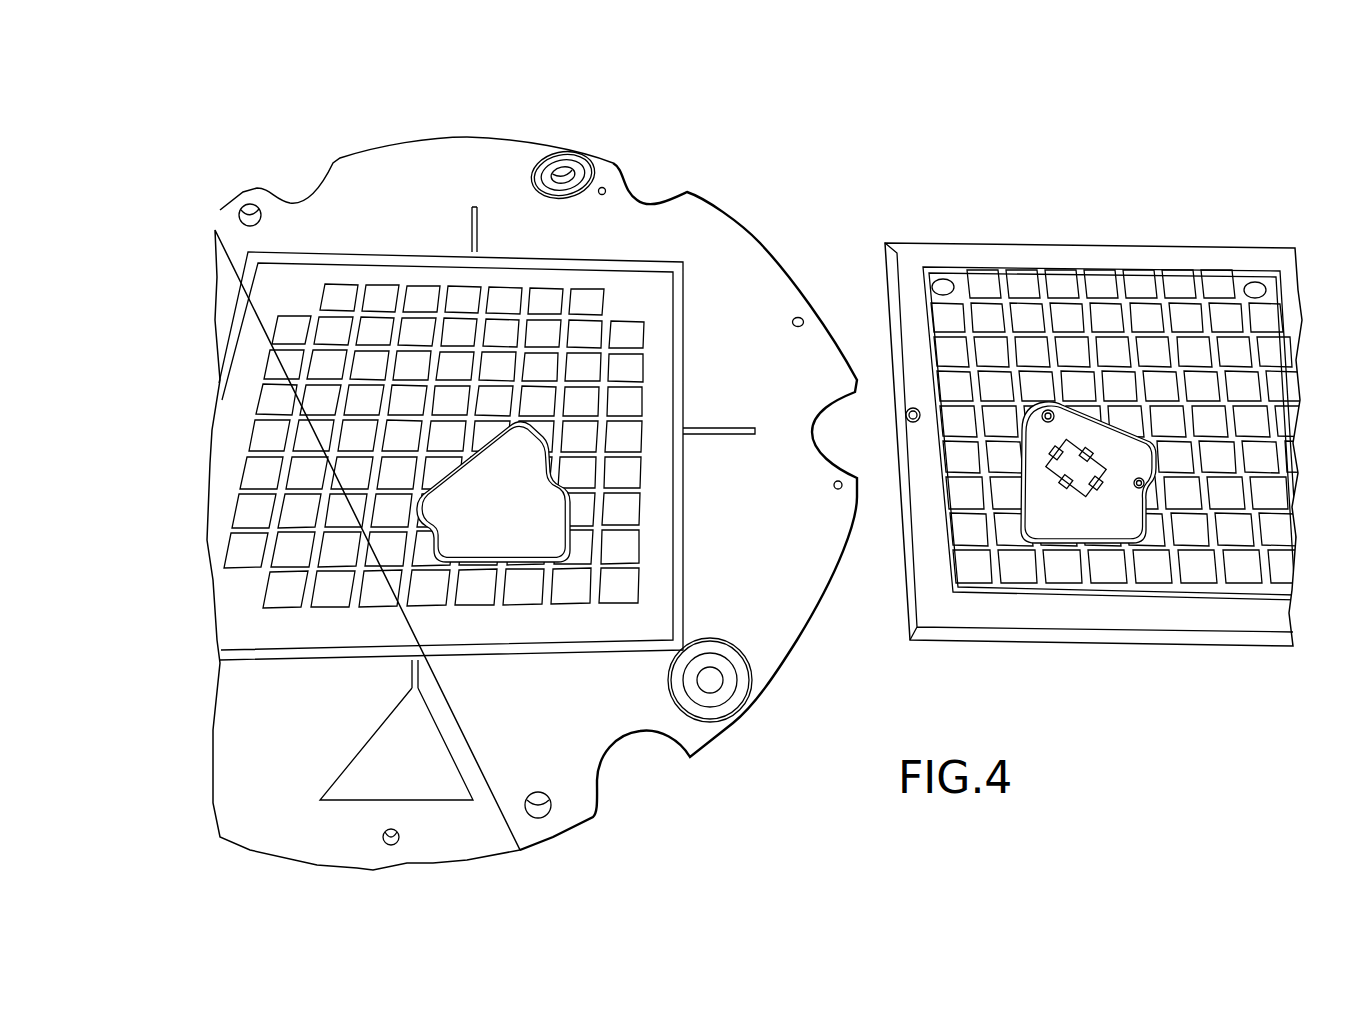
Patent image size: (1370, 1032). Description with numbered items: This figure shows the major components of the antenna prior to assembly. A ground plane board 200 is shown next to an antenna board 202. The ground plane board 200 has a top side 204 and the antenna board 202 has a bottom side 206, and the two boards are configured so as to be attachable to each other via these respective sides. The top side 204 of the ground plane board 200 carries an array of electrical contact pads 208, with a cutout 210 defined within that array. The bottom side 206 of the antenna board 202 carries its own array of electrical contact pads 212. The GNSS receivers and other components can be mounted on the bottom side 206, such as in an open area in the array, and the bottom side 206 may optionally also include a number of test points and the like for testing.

The ground plane board 200 is at (730, 154).
The antenna board 202 is at (1071, 169).
The top side 204 is at (760, 249).
The bottom side 206 is at (938, 238).
The electrical contact pads 208 is at (545, 300).
The cutout 210 is at (562, 556).
The electrical contact pads 212 is at (1067, 573).